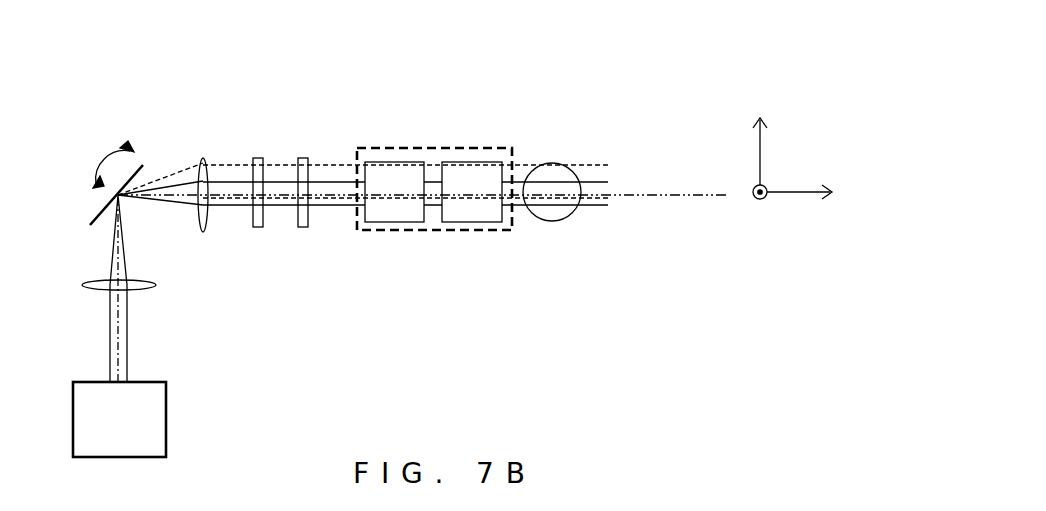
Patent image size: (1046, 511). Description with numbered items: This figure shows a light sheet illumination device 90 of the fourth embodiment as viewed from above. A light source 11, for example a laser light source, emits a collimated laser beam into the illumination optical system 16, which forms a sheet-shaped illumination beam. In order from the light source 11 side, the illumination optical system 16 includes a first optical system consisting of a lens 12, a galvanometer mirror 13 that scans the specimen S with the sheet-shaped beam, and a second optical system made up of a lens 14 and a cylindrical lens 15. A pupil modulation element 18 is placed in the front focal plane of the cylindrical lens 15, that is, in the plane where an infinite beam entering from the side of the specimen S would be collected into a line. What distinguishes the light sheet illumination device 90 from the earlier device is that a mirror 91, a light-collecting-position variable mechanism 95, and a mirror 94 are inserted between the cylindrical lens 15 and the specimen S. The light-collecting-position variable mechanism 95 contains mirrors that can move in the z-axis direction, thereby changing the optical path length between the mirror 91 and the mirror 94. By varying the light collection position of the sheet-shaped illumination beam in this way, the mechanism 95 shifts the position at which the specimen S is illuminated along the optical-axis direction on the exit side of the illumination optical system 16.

The light source 11 is at (168, 410).
The lens 12 is at (157, 285).
The galvanometer mirror 13 is at (105, 210).
The lens 14 is at (204, 233).
The cylindrical lens 15 is at (304, 227).
The illumination optical system 16 is at (165, 330).
The pupil modulation element 18 is at (260, 158).
The light sheet illumination device 90 is at (710, 34).
The mirror 91 is at (387, 173).
The mirror 94 is at (474, 173).
The light-collecting-position variable mechanism 95 is at (497, 233).
The specimen S is at (577, 168).